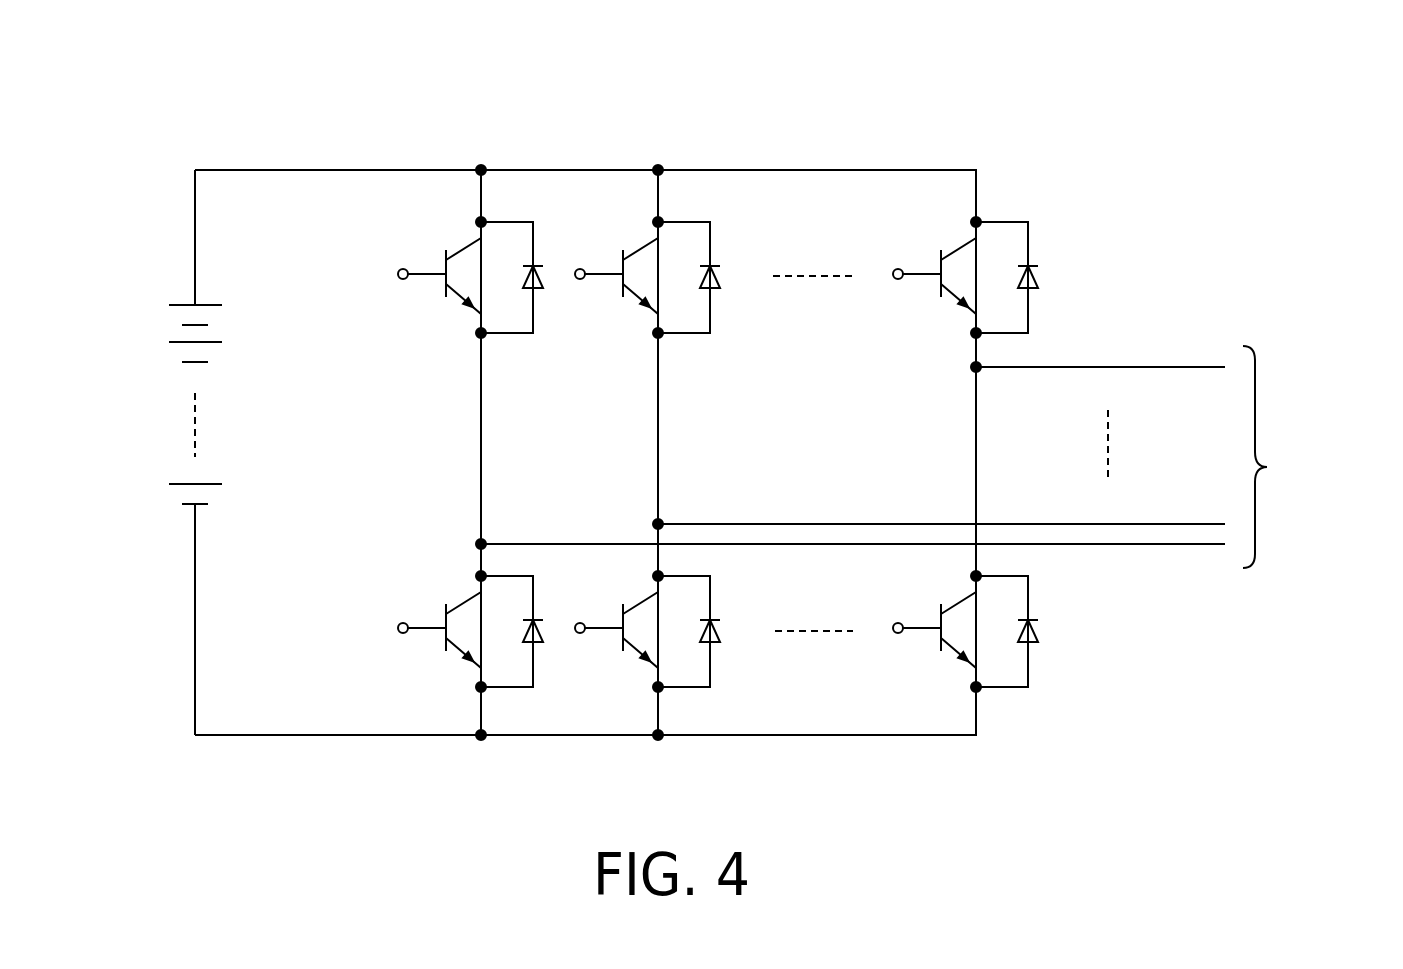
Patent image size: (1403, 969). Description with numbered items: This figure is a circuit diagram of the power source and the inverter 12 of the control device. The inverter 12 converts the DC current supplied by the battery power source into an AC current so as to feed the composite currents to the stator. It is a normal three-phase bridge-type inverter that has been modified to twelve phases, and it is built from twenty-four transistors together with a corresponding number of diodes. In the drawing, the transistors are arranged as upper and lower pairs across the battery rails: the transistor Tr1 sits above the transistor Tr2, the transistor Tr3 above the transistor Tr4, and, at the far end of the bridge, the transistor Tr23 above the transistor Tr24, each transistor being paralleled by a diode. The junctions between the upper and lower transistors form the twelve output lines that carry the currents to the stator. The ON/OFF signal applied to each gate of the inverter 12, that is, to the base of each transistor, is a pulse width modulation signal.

The inverter 12 is at (758, 142).
The transistor Tr1 is at (470, 277).
The transistor Tr2 is at (470, 628).
The transistor Tr3 is at (647, 277).
The transistor Tr4 is at (647, 629).
The transistor Tr23 is at (965, 277).
The transistor Tr24 is at (965, 630).